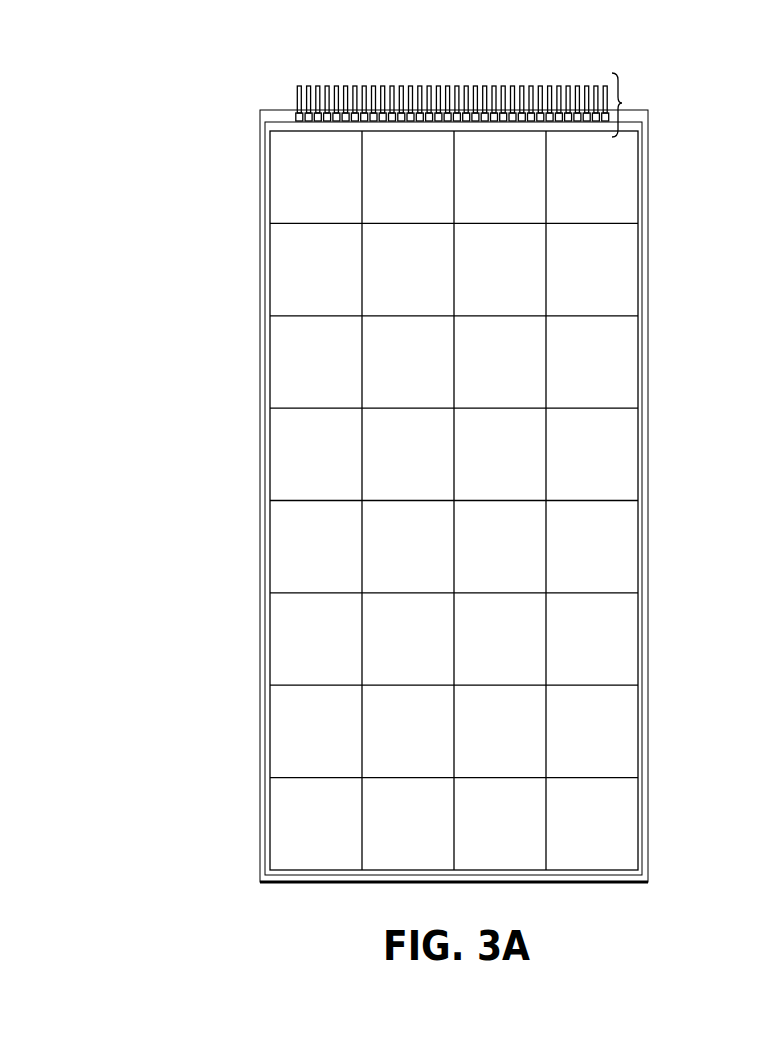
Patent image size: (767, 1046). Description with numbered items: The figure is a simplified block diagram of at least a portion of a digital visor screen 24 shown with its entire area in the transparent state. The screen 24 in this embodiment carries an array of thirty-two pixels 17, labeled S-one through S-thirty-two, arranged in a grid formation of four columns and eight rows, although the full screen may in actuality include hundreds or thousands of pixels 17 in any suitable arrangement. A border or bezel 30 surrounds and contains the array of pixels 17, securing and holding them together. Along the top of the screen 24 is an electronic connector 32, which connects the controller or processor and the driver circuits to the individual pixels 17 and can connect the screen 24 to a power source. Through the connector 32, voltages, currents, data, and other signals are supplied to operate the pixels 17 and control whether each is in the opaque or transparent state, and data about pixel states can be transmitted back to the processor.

The visor screen 24 is at (237, 97).
The pixels 17 is at (278, 272).
The bezel 30 is at (650, 740).
The electronic connector 32 is at (622, 103).